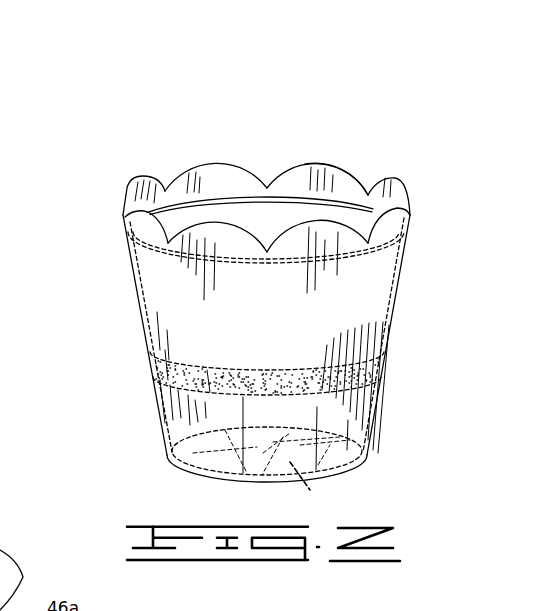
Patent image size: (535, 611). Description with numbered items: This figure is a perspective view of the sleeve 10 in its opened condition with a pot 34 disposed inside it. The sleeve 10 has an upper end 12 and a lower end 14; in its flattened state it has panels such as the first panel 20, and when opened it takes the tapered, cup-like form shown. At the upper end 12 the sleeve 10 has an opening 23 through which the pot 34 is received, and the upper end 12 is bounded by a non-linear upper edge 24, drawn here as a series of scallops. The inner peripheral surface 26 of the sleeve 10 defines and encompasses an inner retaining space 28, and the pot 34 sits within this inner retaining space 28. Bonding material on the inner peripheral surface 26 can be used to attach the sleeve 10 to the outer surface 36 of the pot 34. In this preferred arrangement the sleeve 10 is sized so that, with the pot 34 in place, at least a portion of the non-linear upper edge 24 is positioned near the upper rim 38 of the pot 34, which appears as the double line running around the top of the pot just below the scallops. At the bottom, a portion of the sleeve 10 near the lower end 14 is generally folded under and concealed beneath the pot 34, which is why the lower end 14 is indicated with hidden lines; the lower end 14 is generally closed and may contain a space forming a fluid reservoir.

The sleeve 10 is at (118, 205).
The upper end 12 is at (165, 190).
The lower end 14 is at (310, 490).
The first panel 20 is at (383, 286).
The opening 23 is at (168, 218).
The non-linear upper edge 24 is at (228, 163).
The inner peripheral surface 26 is at (318, 183).
The inner retaining space 28 is at (350, 187).
The pot 34 is at (375, 208).
The outer surface 36 is at (295, 382).
The upper rim 38 is at (253, 190).